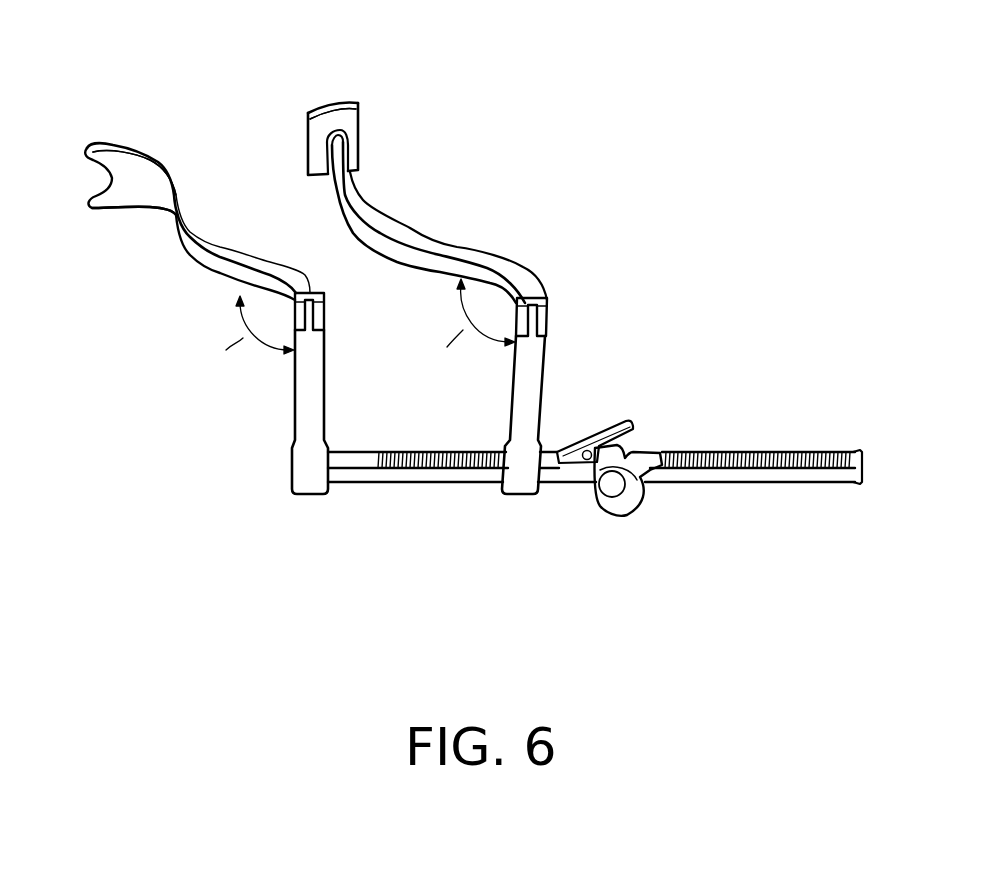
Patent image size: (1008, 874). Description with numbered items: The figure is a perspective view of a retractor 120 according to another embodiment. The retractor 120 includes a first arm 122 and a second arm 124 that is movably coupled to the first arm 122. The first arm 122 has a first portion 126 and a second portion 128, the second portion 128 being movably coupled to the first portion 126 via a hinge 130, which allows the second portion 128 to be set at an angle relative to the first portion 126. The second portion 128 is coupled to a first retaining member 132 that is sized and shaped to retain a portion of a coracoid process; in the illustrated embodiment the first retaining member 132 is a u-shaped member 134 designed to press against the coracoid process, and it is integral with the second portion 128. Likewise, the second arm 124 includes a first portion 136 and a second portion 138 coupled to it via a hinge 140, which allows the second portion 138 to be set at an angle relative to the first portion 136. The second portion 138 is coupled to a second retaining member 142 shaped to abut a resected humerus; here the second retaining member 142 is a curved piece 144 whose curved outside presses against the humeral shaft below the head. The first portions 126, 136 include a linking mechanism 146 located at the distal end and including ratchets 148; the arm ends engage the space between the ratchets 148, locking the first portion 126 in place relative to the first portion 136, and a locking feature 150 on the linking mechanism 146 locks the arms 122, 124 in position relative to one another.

The retractor 120 is at (704, 211).
The first arm 122 is at (216, 440).
The second arm 124 is at (558, 133).
The first portion 126 is at (297, 405).
The second portion 128 is at (213, 281).
The hinge 130 is at (306, 298).
The first retaining member 132 is at (113, 196).
The u-shaped member 134 is at (137, 175).
The first portion 136 is at (544, 396).
The second portion 138 is at (438, 246).
The hinge 140 is at (550, 316).
The second retaining member 142 is at (361, 134).
The curved piece 144 is at (335, 112).
The linking mechanism 146 is at (740, 477).
The ratchets 148 is at (817, 477).
The locking feature 150 is at (631, 512).